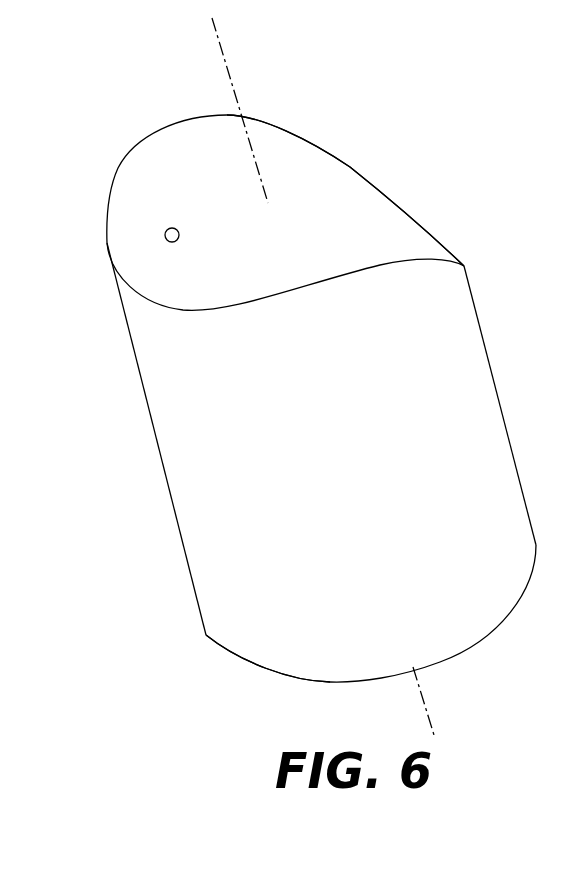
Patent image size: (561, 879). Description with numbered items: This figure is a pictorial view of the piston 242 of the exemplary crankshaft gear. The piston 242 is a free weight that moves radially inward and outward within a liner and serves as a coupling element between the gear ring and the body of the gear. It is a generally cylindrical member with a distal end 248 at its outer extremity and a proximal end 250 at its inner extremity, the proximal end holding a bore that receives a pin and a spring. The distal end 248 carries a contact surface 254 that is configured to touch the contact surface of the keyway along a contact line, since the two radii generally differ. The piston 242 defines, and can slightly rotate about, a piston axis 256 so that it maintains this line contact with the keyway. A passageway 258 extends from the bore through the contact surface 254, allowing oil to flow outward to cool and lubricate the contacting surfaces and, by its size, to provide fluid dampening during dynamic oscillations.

The piston 242 is at (497, 357).
The distal end 248 is at (105, 180).
The proximal end 250 is at (248, 667).
The contact surface 254 is at (217, 213).
The piston axis 256 is at (227, 62).
The passageway 258 is at (173, 242).